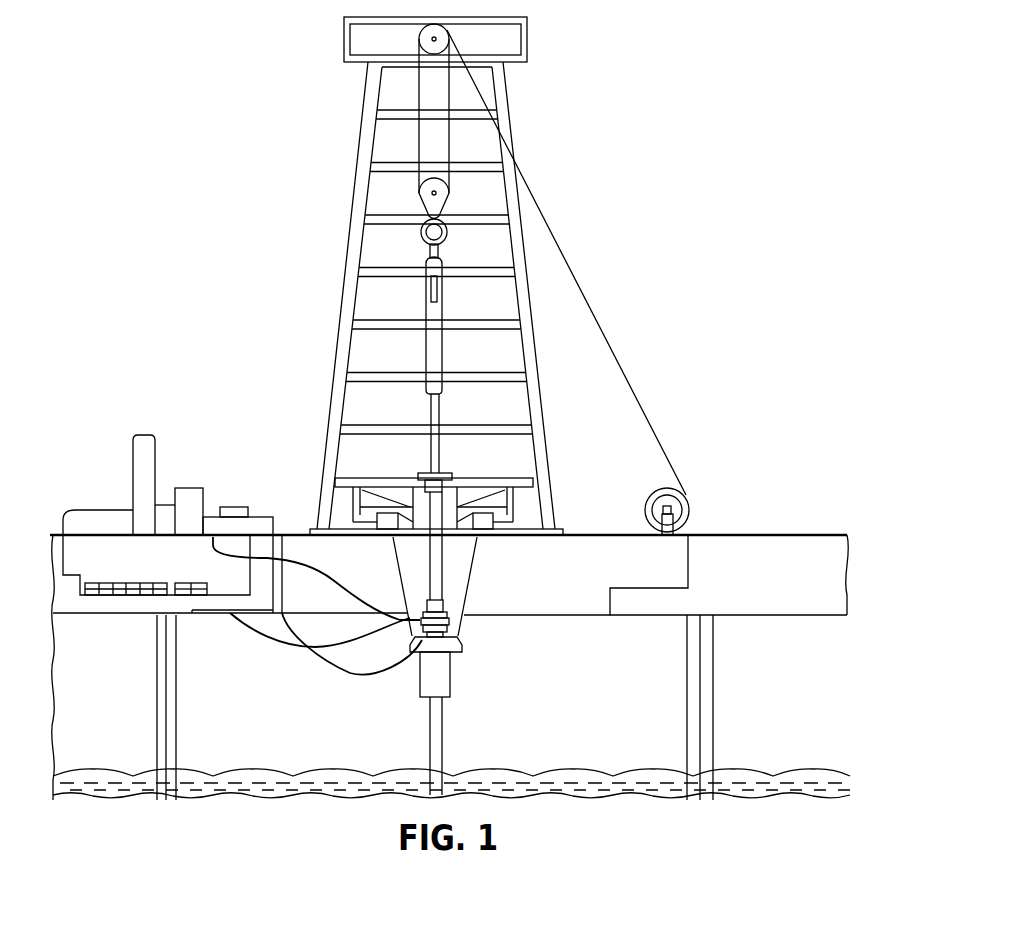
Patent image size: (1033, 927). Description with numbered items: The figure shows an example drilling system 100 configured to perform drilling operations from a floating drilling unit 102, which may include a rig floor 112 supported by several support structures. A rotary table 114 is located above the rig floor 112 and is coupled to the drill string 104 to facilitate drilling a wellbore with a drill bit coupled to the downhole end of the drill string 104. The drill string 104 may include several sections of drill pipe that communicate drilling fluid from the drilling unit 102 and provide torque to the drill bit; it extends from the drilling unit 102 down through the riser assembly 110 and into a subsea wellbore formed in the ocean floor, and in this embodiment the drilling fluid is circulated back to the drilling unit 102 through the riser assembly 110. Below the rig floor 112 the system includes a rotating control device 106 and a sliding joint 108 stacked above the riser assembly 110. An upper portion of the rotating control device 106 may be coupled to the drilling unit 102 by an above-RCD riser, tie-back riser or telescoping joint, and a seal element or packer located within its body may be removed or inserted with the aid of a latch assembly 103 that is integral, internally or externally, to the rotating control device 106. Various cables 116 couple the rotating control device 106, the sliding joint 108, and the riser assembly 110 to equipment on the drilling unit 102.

The drilling system 100 is at (246, 233).
The drilling unit 102 is at (286, 400).
The latch assembly 103 is at (447, 618).
The drill string 104 is at (441, 414).
The rotating control device 106 is at (460, 643).
The sliding joint 108 is at (449, 674).
The riser assembly 110 is at (443, 722).
The rig floor 112 is at (783, 591).
The rotary table 114 is at (535, 499).
The cables 116 is at (295, 563).